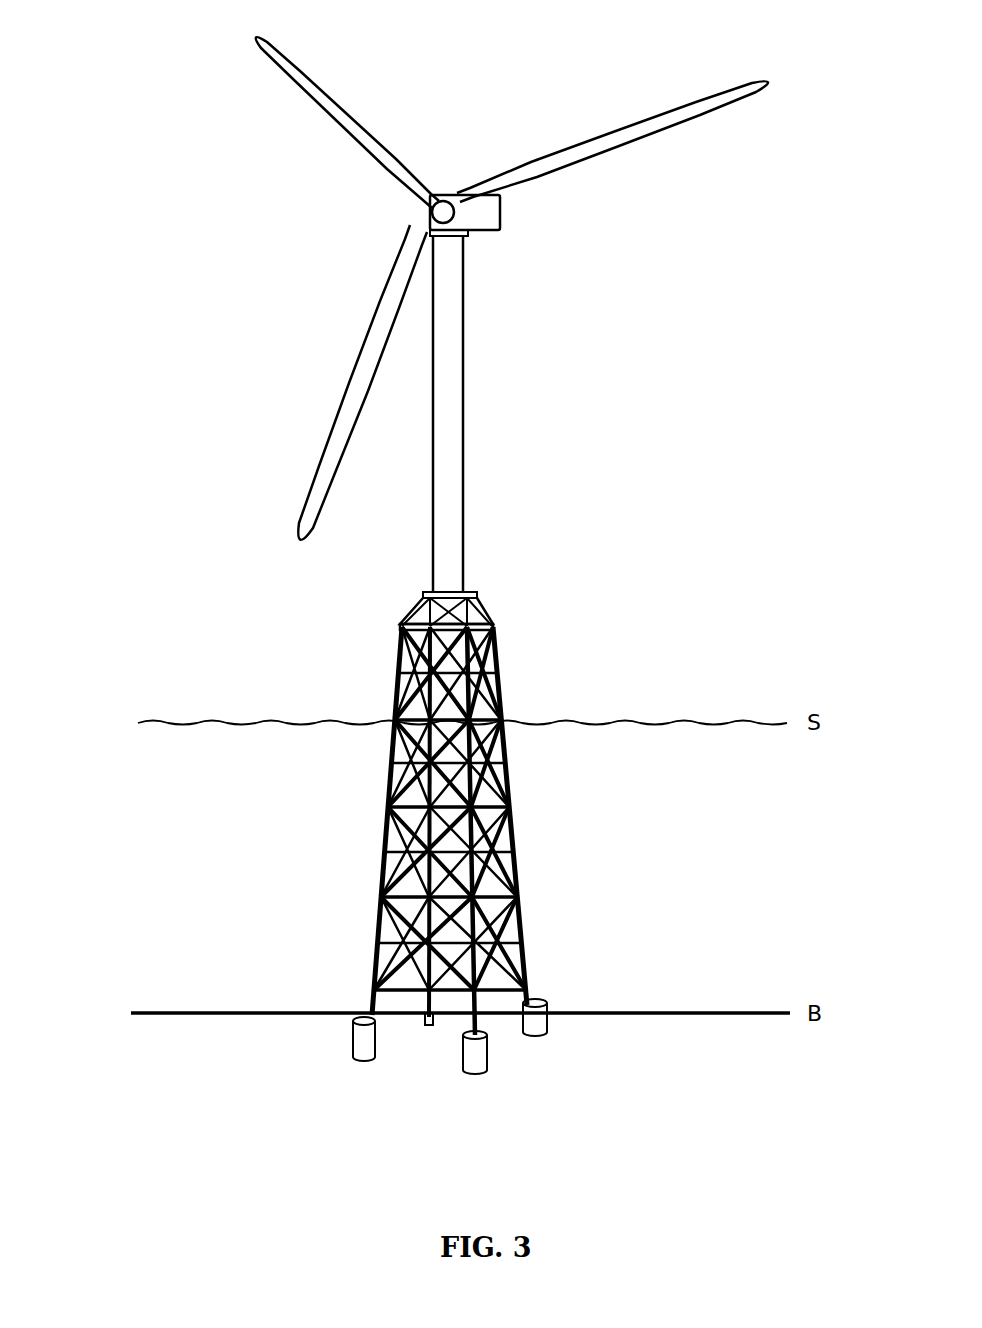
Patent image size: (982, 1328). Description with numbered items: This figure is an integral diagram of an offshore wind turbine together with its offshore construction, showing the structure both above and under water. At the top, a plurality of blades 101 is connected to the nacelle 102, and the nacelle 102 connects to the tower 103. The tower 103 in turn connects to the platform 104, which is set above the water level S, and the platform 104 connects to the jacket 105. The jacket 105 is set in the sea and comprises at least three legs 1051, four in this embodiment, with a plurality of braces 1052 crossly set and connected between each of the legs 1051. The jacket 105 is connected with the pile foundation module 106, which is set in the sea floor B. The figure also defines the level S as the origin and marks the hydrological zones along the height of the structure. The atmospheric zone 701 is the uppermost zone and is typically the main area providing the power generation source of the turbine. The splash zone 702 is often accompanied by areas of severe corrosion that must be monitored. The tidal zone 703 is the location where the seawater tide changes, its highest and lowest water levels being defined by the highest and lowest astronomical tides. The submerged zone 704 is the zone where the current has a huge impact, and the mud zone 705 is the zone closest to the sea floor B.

The blades 101 is at (615, 137).
The nacelle 102 is at (498, 217).
The tower 103 is at (454, 363).
The platform 104 is at (478, 596).
The jacket 105 is at (498, 823).
The legs 1051 is at (520, 948).
The braces 1052 is at (462, 805).
The pile foundation module 106 is at (483, 1063).
The atmospheric zone 701 is at (123, 0).
The splash zone 702 is at (125, 563).
The tidal zone 703 is at (125, 635).
The submerged zone 704 is at (125, 807).
The mud zone 705 is at (125, 912).